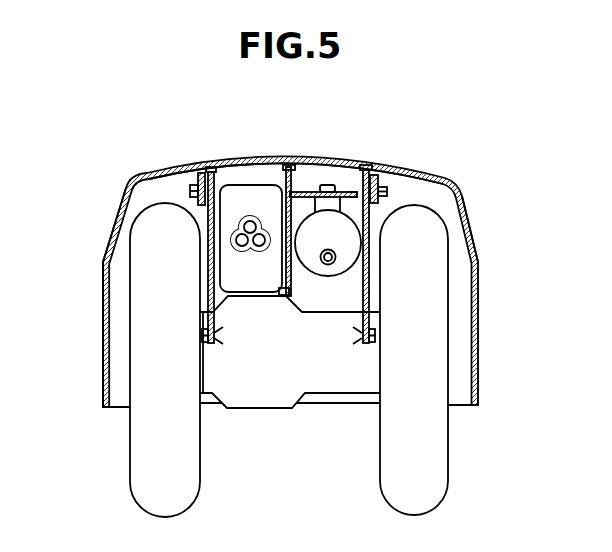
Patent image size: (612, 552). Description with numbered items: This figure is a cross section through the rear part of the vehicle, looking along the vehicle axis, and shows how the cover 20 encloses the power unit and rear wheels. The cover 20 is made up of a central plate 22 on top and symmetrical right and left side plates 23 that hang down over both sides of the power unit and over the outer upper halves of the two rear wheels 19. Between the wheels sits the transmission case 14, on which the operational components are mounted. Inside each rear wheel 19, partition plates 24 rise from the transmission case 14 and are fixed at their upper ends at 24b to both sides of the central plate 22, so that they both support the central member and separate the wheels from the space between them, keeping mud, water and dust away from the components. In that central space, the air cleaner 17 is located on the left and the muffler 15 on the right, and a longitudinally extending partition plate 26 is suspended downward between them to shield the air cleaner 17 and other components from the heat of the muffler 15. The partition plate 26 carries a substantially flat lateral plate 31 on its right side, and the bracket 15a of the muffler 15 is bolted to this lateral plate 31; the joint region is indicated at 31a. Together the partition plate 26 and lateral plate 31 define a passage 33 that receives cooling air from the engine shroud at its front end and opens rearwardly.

The transmission case 14 is at (260, 397).
The muffler 15 is at (331, 278).
The bracket of the muffler 15a is at (336, 205).
The air cleaner 17 is at (237, 197).
The rear wheels 19 is at (143, 487).
The cover 20 is at (135, 159).
The central plate 22 is at (270, 158).
The side plates 23 is at (113, 218).
The partition plates 24 is at (209, 273).
The upper fixing point of partition plate 24b is at (195, 182).
The partition plate 26 is at (301, 293).
The lateral plate 31 is at (357, 185).
The bracket end 31a is at (342, 192).
The passage 33 is at (356, 285).